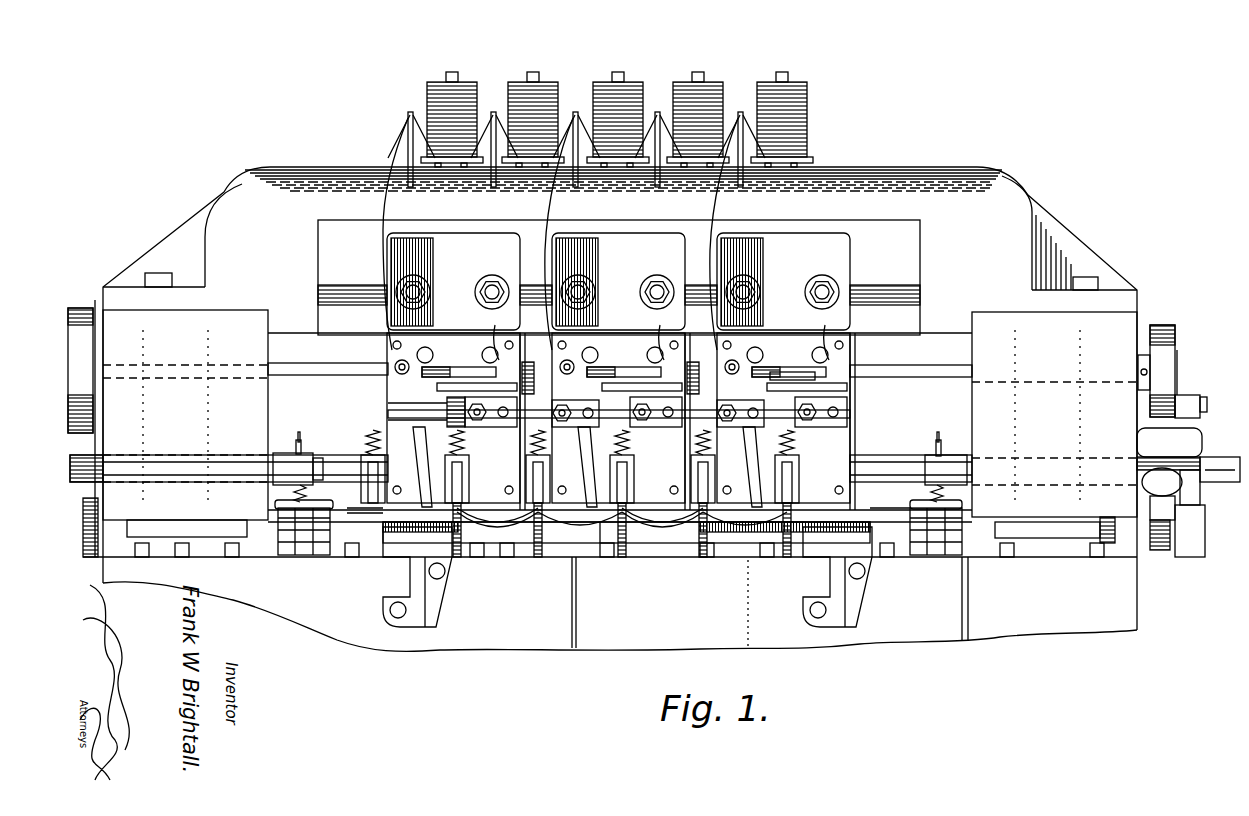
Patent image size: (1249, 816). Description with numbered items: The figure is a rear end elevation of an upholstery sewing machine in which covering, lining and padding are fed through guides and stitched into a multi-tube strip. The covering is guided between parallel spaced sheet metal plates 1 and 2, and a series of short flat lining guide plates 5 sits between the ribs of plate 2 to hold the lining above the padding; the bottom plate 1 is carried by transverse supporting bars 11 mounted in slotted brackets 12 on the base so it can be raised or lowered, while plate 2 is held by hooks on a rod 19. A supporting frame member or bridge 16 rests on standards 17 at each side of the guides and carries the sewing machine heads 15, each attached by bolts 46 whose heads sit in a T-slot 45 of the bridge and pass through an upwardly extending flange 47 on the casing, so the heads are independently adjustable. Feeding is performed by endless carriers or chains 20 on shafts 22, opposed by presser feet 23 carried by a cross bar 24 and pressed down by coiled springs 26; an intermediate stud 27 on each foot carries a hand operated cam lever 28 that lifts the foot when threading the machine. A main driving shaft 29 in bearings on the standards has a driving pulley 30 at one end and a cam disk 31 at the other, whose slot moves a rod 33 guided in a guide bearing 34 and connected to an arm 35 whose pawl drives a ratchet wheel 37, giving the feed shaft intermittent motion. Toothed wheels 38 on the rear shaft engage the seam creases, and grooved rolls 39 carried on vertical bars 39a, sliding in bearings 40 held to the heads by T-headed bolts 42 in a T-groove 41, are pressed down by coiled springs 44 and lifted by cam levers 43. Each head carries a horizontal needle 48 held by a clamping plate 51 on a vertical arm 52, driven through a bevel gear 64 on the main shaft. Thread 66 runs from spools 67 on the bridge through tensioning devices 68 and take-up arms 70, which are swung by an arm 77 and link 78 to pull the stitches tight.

The plate 1 is at (350, 545).
The plate 2 is at (360, 510).
The lining guide plate 5 is at (103, 287).
The transverse supporting bar 11 is at (660, 545).
The slotted bracket 12 is at (410, 578).
The sewing machine head 15 is at (430, 335).
The supporting frame member 16 is at (903, 175).
The standard 17 is at (620, 415).
The rod 19 is at (330, 478).
The endless carrier 20 is at (302, 557).
The shaft 22 is at (178, 525).
The presser foot 23 is at (278, 503).
The cross bar 24 is at (295, 465).
The coiled spring 26 is at (308, 488).
The intermediate stud 27 is at (302, 447).
The hand operated cam lever 28 is at (300, 435).
The main driving shaft 29 is at (345, 375).
The driving pulley 30 is at (85, 338).
The cam disk 31 is at (1177, 352).
The rod 33 is at (1200, 412).
The guide bearing 34 is at (1169, 474).
The arm 35 is at (1185, 557).
The ratchet wheel 37 is at (1158, 552).
The toothed wheel 38 is at (455, 555).
The grooved roll 39 is at (630, 480).
The vertical bar 39a is at (464, 372).
The bearing 40 is at (410, 428).
The T-groove 41 is at (388, 413).
The T-headed bolt 42 is at (825, 418).
The hand operated cam lever 43 is at (470, 384).
The coiled spring 44 is at (458, 452).
The T-slot 45 is at (878, 292).
The bolt 46 is at (492, 290).
The flange 47 is at (456, 240).
The needle 48 is at (585, 545).
The clamping plate 51 is at (590, 493).
The vertical arm 52 is at (590, 478).
The bevel gear 64 is at (528, 368).
The thread 66 is at (383, 238).
The spool 67 is at (512, 95).
The tensioning device 68 is at (398, 362).
The take-up arm 70 is at (428, 445).
The arm 77 is at (496, 358).
The link 78 is at (790, 372).